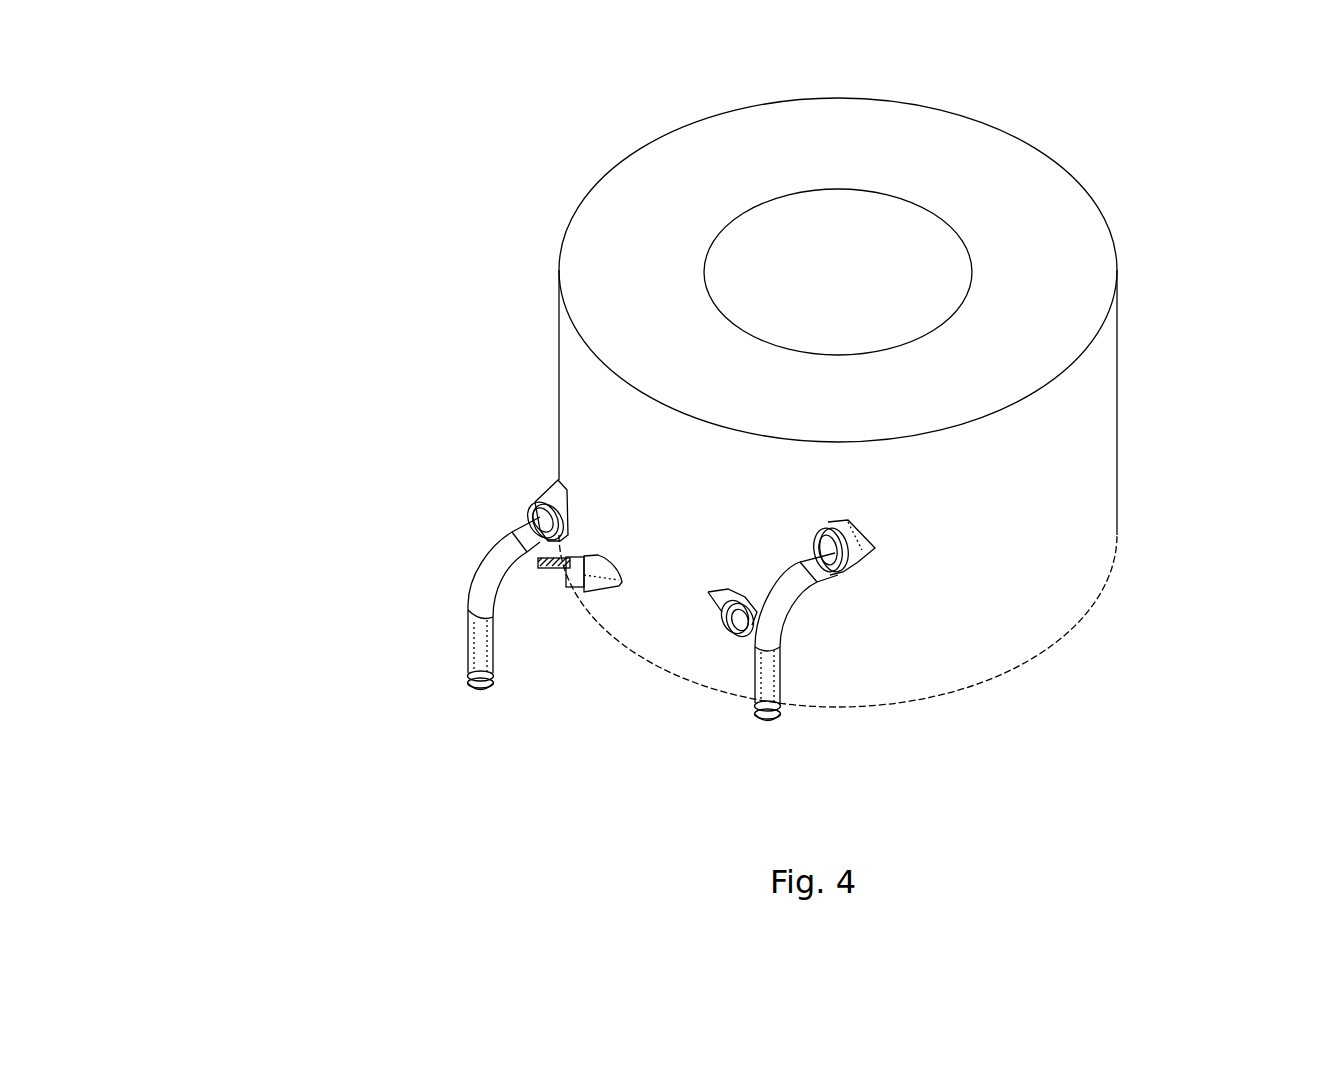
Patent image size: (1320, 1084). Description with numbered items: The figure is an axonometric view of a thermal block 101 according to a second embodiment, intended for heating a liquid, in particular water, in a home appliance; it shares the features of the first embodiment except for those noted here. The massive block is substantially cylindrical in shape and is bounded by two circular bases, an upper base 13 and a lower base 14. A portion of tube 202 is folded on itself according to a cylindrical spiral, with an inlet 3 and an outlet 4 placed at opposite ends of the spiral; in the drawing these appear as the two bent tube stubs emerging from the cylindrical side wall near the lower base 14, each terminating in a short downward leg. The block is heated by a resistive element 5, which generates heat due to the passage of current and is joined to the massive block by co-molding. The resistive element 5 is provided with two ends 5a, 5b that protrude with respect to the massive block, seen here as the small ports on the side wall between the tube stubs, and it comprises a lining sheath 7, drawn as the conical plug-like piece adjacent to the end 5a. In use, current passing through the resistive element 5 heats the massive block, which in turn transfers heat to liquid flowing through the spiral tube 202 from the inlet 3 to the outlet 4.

The inlet 3 is at (467, 680).
The outlet 4 is at (775, 720).
The resistive element 5 is at (724, 632).
The end of resistive element 5a is at (548, 570).
The end of resistive element 5b is at (750, 627).
The lining sheath 7 is at (578, 570).
The upper circular base 13 is at (1042, 223).
The lower circular base 14 is at (1082, 612).
The thermal block 101 is at (319, 751).
The portion of tube 202 is at (859, 546).